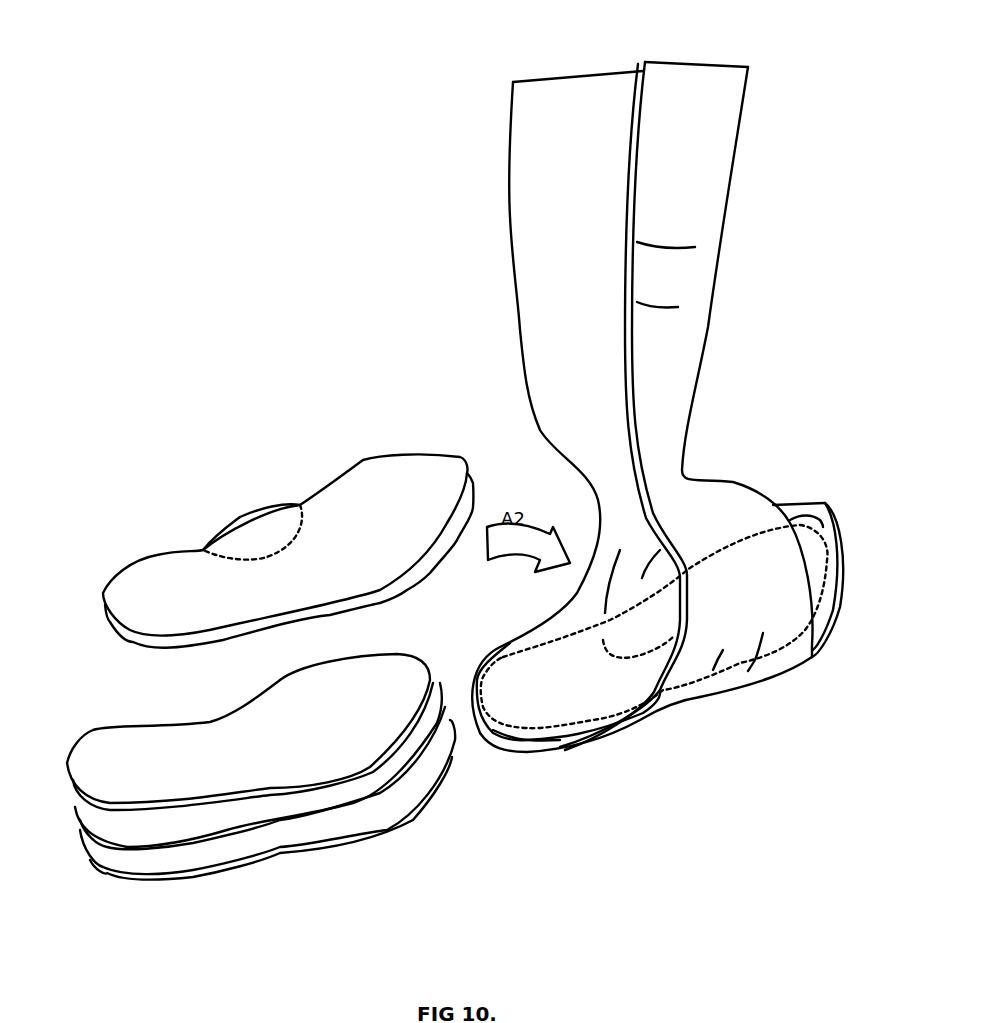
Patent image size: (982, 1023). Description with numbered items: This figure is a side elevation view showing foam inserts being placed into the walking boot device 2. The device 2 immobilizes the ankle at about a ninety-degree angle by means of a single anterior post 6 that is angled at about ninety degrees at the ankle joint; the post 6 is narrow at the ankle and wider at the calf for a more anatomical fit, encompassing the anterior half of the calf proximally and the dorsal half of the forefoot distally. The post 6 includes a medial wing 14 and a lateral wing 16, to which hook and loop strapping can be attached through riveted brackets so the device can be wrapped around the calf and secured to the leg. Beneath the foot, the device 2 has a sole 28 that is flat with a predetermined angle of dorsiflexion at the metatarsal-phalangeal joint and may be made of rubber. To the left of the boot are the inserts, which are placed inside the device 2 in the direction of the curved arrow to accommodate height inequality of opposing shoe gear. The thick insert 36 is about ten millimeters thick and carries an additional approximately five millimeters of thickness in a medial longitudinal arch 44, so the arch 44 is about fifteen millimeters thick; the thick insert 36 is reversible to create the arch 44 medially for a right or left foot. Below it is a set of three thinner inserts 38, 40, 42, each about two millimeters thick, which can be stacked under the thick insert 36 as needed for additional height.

The walking boot device 2 is at (809, 163).
The anterior post 6 is at (724, 285).
The medial wing 14 is at (517, 318).
The lateral wing 16 is at (629, 331).
The sole 28 is at (817, 655).
The thick insert 36 is at (115, 575).
The medial longitudinal arch 44 is at (257, 515).
The thinner insert 38 is at (77, 742).
The thinner insert 40 is at (75, 807).
The thinner insert 42 is at (83, 852).